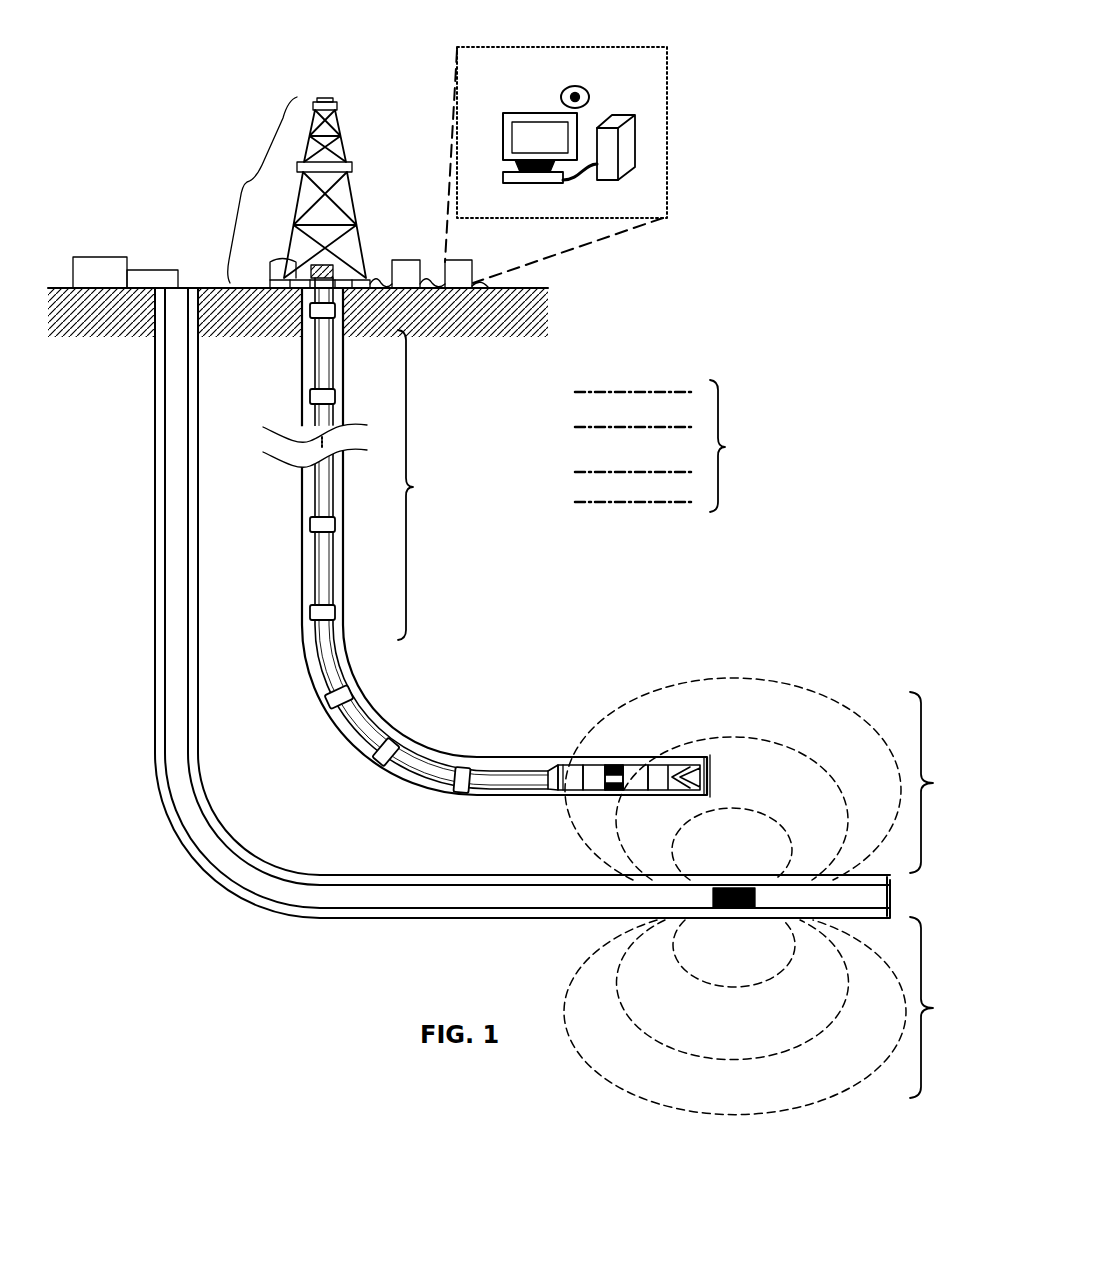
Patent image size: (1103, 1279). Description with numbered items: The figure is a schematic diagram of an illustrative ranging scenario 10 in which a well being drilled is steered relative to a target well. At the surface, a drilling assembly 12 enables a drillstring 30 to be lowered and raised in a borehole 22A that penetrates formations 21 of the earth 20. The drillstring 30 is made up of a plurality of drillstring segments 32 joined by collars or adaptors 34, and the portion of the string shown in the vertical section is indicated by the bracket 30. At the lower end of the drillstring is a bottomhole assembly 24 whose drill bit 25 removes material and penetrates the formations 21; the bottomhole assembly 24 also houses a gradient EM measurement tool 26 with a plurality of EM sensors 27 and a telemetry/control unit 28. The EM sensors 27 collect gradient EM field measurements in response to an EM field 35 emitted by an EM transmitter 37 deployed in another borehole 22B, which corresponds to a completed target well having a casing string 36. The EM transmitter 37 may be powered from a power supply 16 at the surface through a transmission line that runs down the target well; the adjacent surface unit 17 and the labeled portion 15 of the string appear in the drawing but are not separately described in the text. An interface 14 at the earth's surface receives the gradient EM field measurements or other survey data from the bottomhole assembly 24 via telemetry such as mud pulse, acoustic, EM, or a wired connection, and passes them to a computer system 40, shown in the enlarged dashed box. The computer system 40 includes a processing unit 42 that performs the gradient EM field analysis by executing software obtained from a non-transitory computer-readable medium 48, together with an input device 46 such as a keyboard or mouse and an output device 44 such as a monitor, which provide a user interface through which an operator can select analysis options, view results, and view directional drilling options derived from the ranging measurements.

The drilling system 10 is at (268, 71).
The drilling assembly 12 is at (290, 192).
The surface interface 14 is at (408, 259).
The drill string 15 is at (325, 472).
The power supply 16 is at (102, 257).
The surface unit 17 is at (168, 270).
The earth 20 is at (289, 324).
The formations 21 is at (673, 446).
The borehole 22A is at (302, 362).
The another borehole 22B is at (154, 383).
The bottomhole assembly 24 is at (610, 767).
The drill bit 25 is at (658, 782).
The gradient EM measurement tool 26 is at (597, 789).
The EM sensors 27 is at (628, 785).
The telemetry/control unit 28 is at (570, 787).
The drillstring 30 is at (427, 485).
The drillstring segments 32 is at (332, 342).
The collars or adaptors 34 is at (310, 396).
The EM field 35 is at (769, 896).
The casing string 36 is at (192, 673).
The EM transmitter 37 is at (742, 910).
The computer system 40 is at (498, 47).
The processing unit 42 is at (623, 115).
The output device 44 is at (505, 138).
The input device 46 is at (557, 183).
The non-transitory computer-readable medium 48 is at (570, 88).